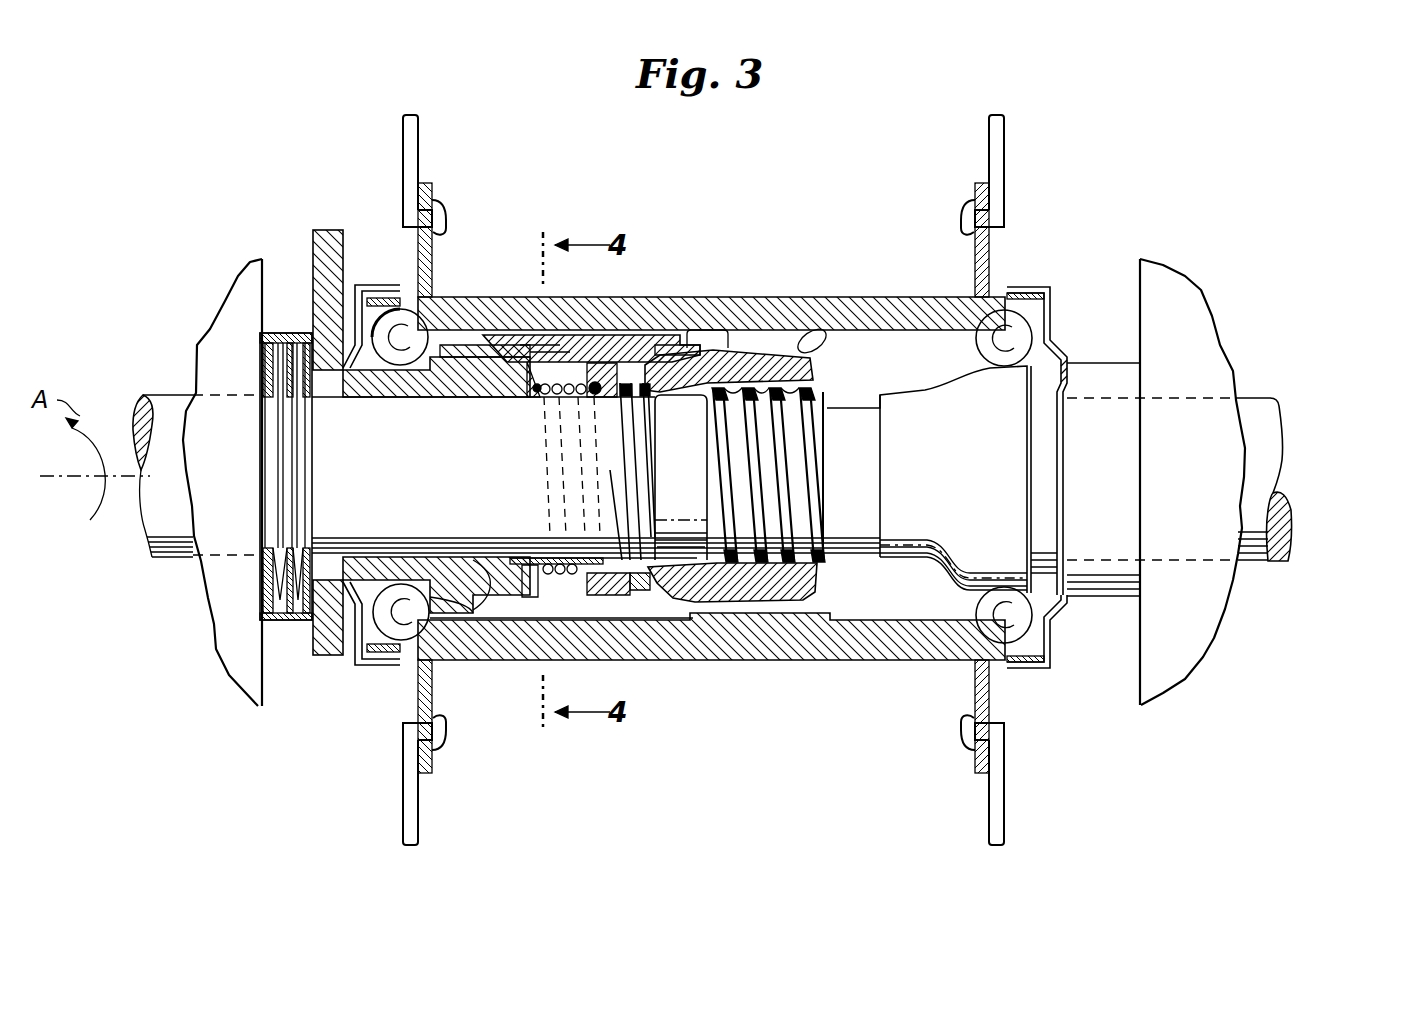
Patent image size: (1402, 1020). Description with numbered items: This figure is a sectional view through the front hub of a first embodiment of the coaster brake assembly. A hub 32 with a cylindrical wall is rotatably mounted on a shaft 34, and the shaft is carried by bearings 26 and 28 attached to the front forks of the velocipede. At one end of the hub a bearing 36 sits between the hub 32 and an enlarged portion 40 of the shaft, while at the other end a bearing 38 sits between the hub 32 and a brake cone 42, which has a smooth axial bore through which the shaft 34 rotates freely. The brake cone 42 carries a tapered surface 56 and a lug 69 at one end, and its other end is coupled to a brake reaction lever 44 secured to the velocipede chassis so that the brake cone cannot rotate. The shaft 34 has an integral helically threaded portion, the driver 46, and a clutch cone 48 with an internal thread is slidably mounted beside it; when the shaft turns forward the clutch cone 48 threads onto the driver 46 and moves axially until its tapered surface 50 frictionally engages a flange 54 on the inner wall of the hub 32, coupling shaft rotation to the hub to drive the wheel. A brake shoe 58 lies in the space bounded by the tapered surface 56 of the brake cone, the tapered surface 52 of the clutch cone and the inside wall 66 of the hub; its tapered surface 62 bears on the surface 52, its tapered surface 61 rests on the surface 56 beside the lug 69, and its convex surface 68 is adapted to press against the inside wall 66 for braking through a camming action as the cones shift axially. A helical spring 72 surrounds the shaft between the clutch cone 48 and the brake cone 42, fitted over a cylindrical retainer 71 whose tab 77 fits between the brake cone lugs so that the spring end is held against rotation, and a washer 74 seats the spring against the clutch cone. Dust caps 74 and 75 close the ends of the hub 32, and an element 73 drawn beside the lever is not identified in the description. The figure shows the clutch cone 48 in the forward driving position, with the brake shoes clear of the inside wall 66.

The bearing 26 is at (218, 332).
The bearing 28 is at (1190, 336).
The hub 32 is at (760, 660).
The shaft 34 is at (1266, 420).
The bearing 36 is at (1030, 665).
The bearing 38 is at (386, 665).
The enlarged portion of the shaft 40 is at (1031, 479).
The brake cone 42 is at (468, 372).
The brake reaction lever 44 is at (313, 256).
The driver 46 is at (800, 500).
The clutch cone 48 is at (693, 600).
The tapered surface 50 is at (770, 352).
The tapered surface 52 is at (692, 330).
The flange 54 is at (826, 334).
The tapered surface 56 is at (490, 398).
The brake shoe 58 is at (598, 345).
The tapered surface 61 is at (530, 358).
The tapered surface 62 is at (660, 346).
The inside wall 66 is at (430, 332).
The convex surface 68 is at (558, 340).
The lug 69 is at (490, 600).
The cylindrical retainer 71 is at (532, 582).
The helical spring 72 is at (612, 508).
The clutch plates 73 is at (283, 620).
The washer 74 is at (388, 288).
The dust cap 75 is at (1053, 289).
The tab 77 is at (532, 398).